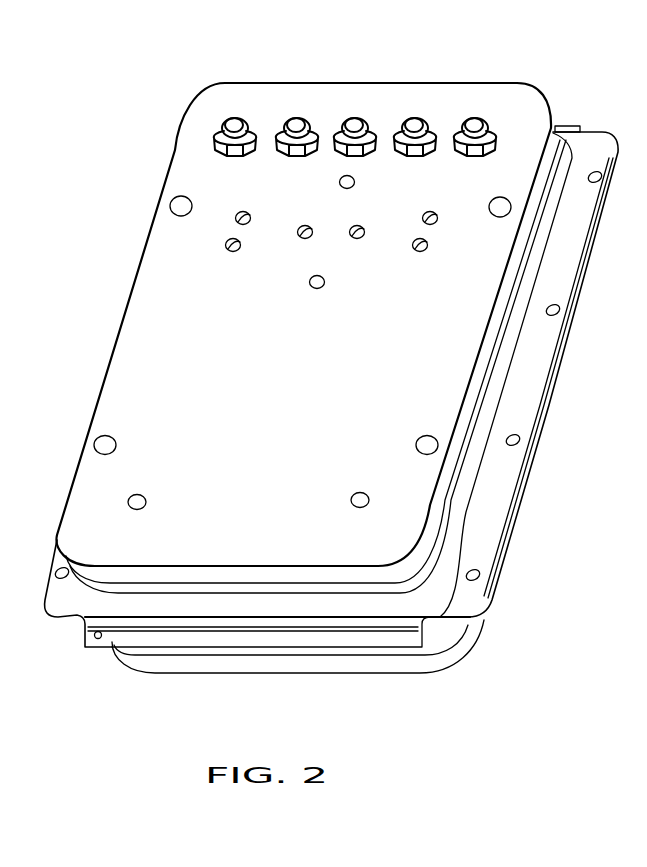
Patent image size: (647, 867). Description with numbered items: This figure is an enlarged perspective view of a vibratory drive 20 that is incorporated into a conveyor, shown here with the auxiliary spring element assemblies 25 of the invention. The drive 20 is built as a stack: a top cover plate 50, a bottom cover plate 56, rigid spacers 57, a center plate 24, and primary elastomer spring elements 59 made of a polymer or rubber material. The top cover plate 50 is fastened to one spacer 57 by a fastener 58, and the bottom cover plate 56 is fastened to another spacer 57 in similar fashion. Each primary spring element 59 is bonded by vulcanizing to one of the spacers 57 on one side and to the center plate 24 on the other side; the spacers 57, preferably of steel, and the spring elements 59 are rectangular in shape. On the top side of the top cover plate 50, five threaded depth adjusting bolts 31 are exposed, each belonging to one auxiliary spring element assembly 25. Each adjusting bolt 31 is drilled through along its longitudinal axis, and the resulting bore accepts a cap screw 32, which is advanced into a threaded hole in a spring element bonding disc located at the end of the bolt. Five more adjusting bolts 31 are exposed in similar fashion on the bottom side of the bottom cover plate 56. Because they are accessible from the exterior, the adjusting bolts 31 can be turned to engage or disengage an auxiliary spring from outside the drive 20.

The drive 20 is at (506, 62).
The center plate 24 is at (588, 132).
The auxiliary spring element assembly 25 is at (372, 108).
The threaded depth adjusting bolt 31 is at (368, 112).
The cap screw 32 is at (293, 120).
The top cover plate 50 is at (135, 357).
The bottom cover plate 56 is at (355, 675).
The rigid spacer 57 is at (447, 636).
The fastener 58 is at (169, 200).
The primary elastomer spring element 59 is at (455, 530).